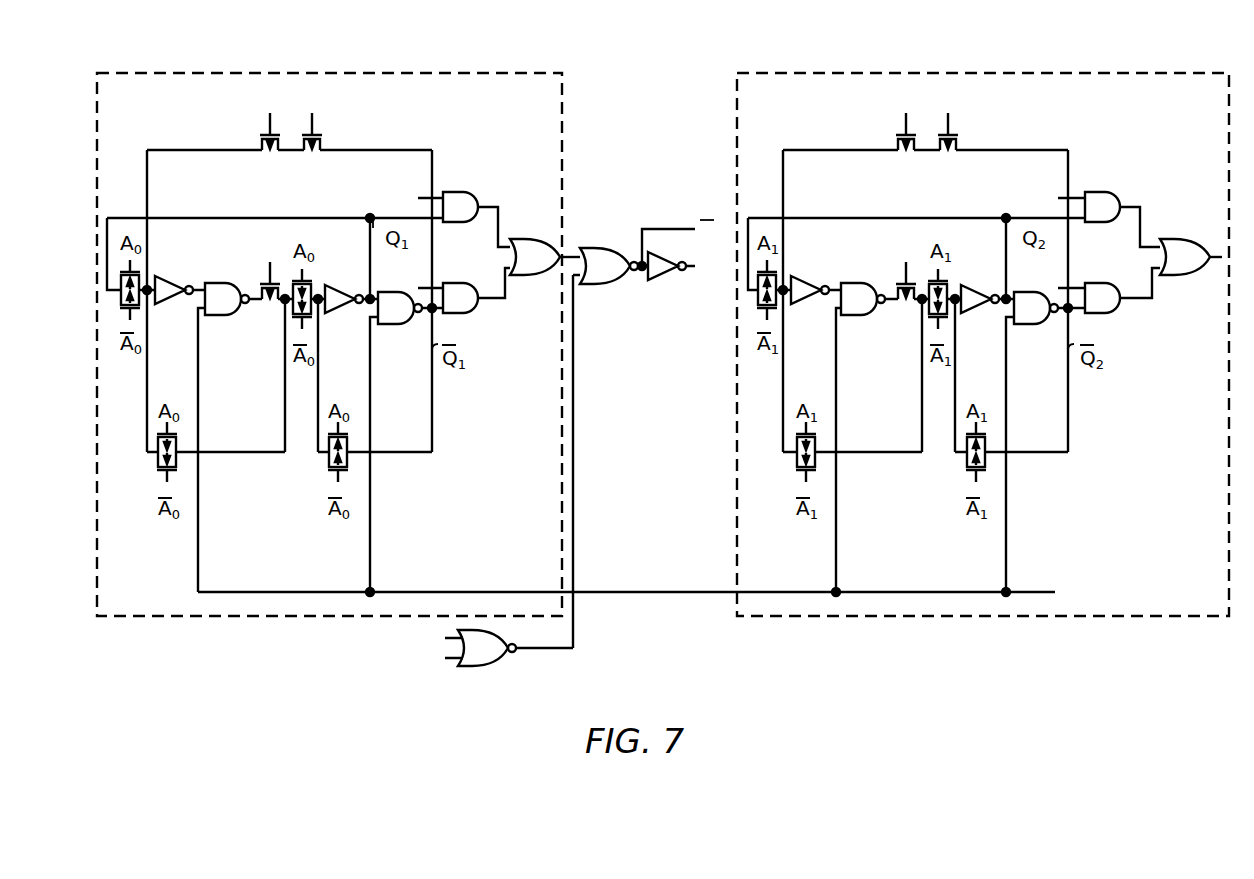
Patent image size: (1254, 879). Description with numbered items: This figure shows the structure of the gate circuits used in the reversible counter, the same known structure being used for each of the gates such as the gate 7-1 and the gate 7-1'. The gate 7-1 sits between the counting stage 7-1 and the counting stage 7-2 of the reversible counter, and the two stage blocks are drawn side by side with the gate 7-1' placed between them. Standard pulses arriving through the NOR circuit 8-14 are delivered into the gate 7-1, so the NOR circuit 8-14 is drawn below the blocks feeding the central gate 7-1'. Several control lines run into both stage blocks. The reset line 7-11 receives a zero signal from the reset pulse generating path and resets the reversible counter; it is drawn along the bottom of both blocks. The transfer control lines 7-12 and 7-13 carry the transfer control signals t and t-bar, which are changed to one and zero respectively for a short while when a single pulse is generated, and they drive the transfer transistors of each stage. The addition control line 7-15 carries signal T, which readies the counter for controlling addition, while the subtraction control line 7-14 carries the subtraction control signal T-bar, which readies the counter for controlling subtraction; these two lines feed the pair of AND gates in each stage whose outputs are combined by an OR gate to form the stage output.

The gate 7-1 is at (329, 327).
The gate 7-1' is at (647, 161).
The counting stage 7-2 is at (1101, 72).
The reset line 7-11 is at (700, 595).
The transfer control line 7-12 is at (557, 269).
The transfer control line 7-13 is at (641, 120).
The subtraction control line 7-14 is at (789, 285).
The addition control line 7-15 is at (793, 206).
The NOR circuit 8-14 is at (492, 661).